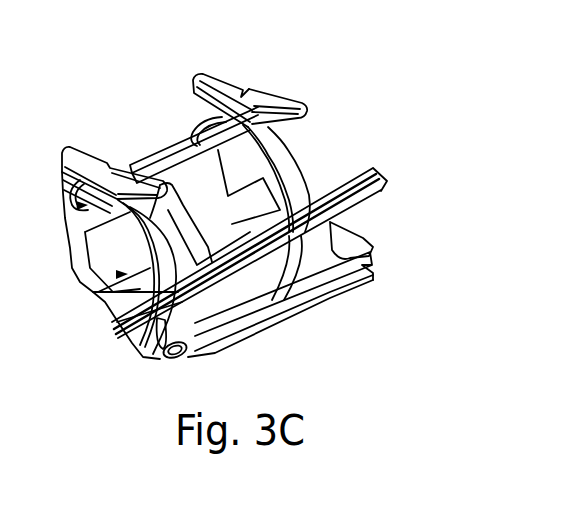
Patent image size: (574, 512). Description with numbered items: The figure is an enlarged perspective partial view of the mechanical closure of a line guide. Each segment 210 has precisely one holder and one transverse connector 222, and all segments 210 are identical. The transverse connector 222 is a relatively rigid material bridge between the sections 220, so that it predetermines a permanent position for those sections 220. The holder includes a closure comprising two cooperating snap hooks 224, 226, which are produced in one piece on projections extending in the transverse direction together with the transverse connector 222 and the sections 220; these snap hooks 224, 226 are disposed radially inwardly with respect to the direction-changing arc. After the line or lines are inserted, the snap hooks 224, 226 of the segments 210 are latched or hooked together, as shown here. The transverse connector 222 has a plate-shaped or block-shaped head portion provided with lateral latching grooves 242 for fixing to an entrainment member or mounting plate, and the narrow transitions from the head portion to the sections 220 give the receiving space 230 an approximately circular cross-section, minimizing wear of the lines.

The segment 210 is at (374, 290).
The section 220 is at (163, 160).
The transverse connector 222 is at (366, 233).
The snap hook 224 is at (213, 84).
The snap hook 226 is at (276, 106).
The receiving space 230 is at (96, 282).
The latching groove 242 is at (375, 263).